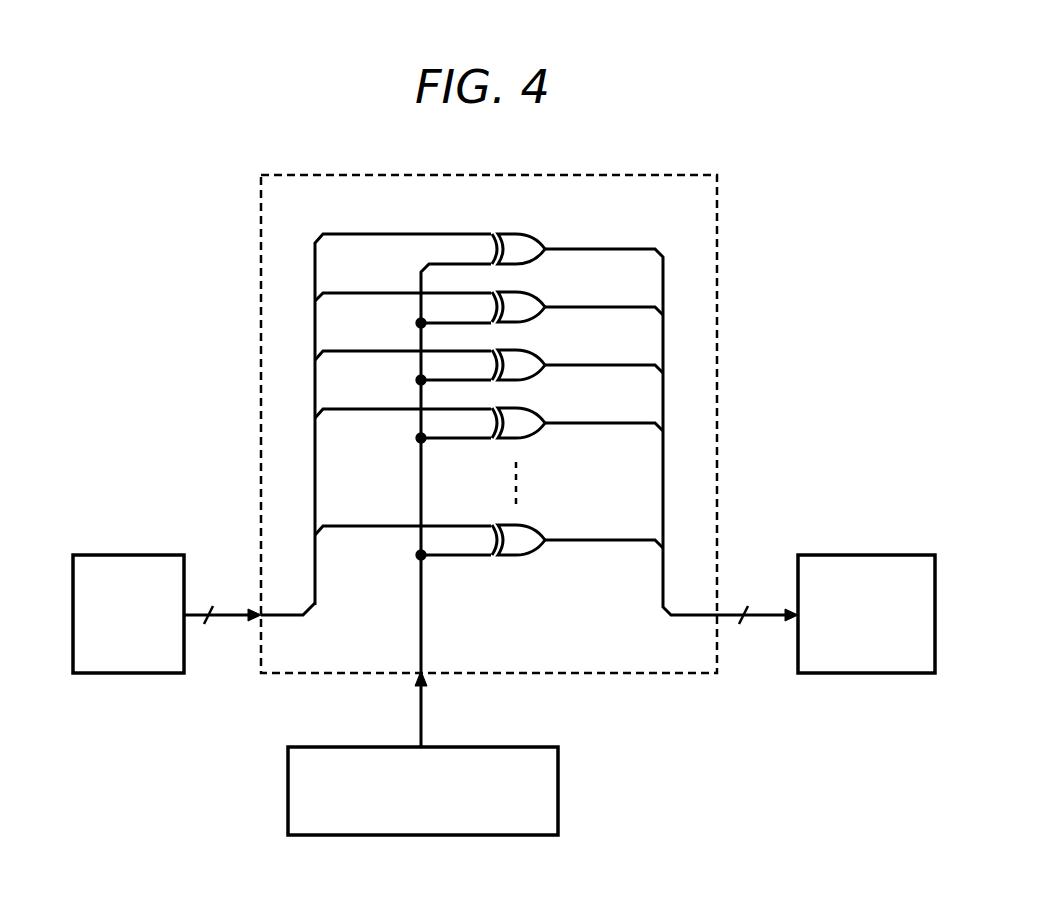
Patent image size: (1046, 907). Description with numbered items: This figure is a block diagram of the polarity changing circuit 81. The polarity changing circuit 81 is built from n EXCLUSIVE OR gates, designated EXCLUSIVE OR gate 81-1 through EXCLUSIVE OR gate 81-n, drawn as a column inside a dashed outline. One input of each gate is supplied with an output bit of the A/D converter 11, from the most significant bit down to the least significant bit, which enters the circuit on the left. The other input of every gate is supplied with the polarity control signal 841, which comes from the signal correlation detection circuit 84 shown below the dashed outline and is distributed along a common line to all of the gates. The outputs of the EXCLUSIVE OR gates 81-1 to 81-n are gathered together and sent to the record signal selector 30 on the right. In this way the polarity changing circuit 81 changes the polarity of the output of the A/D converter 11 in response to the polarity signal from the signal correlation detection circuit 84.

The A/D converter 11 is at (153, 555).
The record signal selector 30 is at (901, 555).
The polarity changing circuit 81 is at (685, 173).
The EXCLUSIVE OR gate 81-1 is at (536, 237).
The EXCLUSIVE OR gate 81-n is at (536, 531).
The signal correlation detection circuit 84 is at (527, 747).
The polarity control signal 841 is at (420, 746).